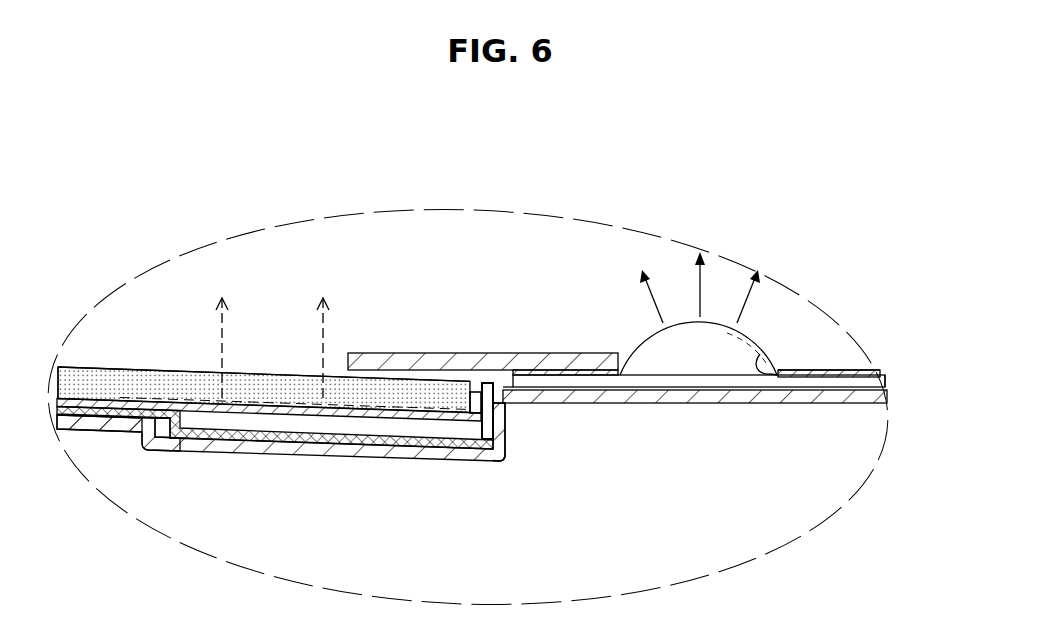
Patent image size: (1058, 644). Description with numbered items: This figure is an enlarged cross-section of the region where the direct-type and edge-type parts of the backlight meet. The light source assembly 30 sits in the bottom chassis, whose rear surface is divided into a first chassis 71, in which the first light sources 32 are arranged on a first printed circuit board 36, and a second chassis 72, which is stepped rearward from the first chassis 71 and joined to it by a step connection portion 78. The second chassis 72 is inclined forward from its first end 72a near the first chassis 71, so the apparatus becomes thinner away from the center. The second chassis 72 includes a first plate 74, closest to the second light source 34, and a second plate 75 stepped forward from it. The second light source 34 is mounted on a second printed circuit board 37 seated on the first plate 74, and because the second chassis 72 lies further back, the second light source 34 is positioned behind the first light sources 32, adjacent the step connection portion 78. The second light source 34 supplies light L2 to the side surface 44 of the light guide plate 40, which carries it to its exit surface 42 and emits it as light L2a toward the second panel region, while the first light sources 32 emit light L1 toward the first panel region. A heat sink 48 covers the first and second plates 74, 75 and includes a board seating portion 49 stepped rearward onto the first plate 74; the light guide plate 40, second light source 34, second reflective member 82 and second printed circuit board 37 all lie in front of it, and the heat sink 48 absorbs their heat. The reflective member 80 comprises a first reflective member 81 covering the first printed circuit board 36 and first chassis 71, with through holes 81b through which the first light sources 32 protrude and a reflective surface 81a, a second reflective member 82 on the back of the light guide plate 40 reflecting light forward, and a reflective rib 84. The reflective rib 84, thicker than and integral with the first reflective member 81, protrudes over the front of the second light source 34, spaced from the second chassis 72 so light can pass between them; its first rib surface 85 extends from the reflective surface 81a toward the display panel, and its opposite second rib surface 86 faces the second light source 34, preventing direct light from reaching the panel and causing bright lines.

The light source assembly 30 is at (642, 303).
The first light source 32 is at (645, 353).
The second light source 34 is at (482, 388).
The first printed circuit board 36 is at (880, 380).
The second printed circuit board 37 is at (332, 425).
The light guide plate 40 is at (265, 390).
The exit surface 42 is at (300, 378).
The side surface 44 is at (467, 440).
The heat sink 48 is at (110, 413).
The board seating portion 49 is at (272, 440).
The first chassis 71 is at (652, 410).
The second chassis 72 is at (217, 452).
The first end 72a is at (500, 463).
The first plate 74 is at (180, 443).
The second plate 75 is at (93, 427).
The step connection portion 78 is at (505, 423).
The reflective member 80 is at (269, 414).
The first reflective member 81 is at (842, 370).
The reflective surface 81a is at (810, 373).
The through hole 81b is at (762, 357).
The second reflective member 82 is at (193, 405).
The reflective rib 84 is at (405, 362).
The first rib surface 85 is at (455, 372).
The second rib surface 86 is at (375, 383).
The light L1 is at (652, 297).
The light L2 is at (402, 405).
The light L2a is at (222, 337).